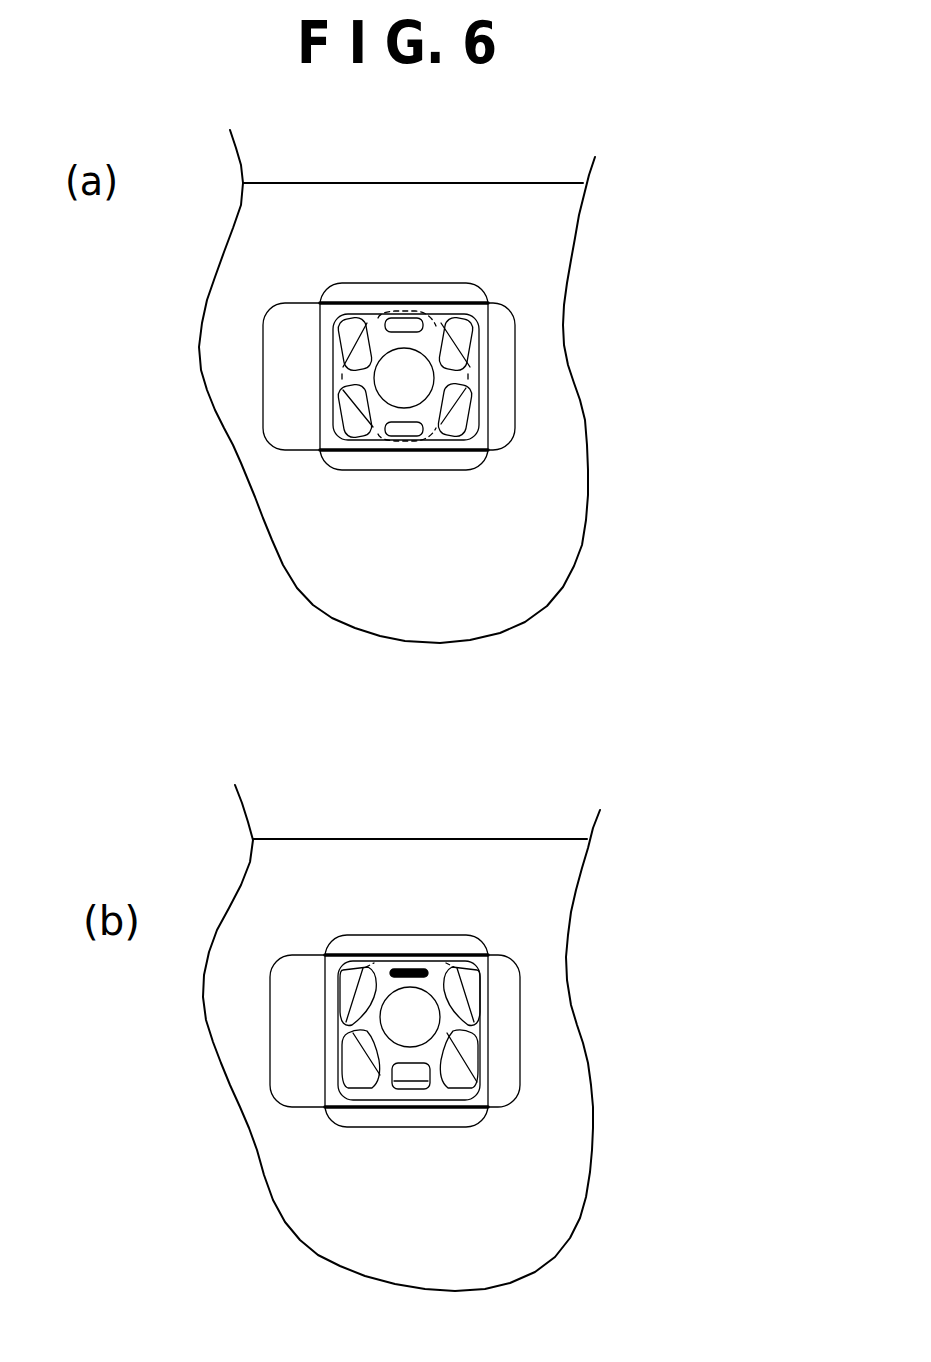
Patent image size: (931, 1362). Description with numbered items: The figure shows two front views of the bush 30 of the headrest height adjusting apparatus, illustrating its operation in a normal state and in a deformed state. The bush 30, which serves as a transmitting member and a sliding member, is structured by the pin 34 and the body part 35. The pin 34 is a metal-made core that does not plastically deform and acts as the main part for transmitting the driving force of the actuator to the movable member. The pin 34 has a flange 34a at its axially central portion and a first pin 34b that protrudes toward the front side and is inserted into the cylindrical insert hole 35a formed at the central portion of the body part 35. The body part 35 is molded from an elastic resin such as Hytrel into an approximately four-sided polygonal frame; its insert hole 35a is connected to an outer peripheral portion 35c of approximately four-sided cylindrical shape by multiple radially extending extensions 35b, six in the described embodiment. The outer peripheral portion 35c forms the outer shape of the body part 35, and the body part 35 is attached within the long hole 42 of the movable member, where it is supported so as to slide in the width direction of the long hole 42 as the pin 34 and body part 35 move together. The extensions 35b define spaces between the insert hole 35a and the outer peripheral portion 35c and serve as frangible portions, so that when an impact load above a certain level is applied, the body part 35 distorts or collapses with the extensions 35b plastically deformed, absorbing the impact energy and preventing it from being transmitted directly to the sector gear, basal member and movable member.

In FIG. 6A, the bush 30 is at (427, 229).
In FIG. 6B, the bush 30 is at (430, 879).
In FIG. 6A, the pin 34 is at (397, 360).
In FIG. 6B, the pin 34 is at (400, 1010).
In FIG. 6A, the body part 35 is at (437, 316).
In FIG. 6B, the body part 35 is at (455, 962).
In FIG. 6A, the long hole 42 is at (292, 306).
In FIG. 6B, the long hole 42 is at (300, 960).
In FIG. 6A, the insert hole 35a is at (443, 360).
In FIG. 6B, the insert hole 35a is at (447, 1012).
In FIG. 6A, the extensions 35b is at (375, 428).
In FIG. 6B, the extensions 35b is at (345, 1090).
In FIG. 6A, the outer peripheral portion 35c is at (328, 348).
In FIG. 6B, the outer peripheral portion 35c is at (333, 1000).
In FIG. 6A, the flange 34a is at (453, 406).
In FIG. 6B, the flange 34a is at (457, 1035).
In FIG. 6A, the first pin 34b is at (423, 405).
In FIG. 6B, the first pin 34b is at (422, 1045).